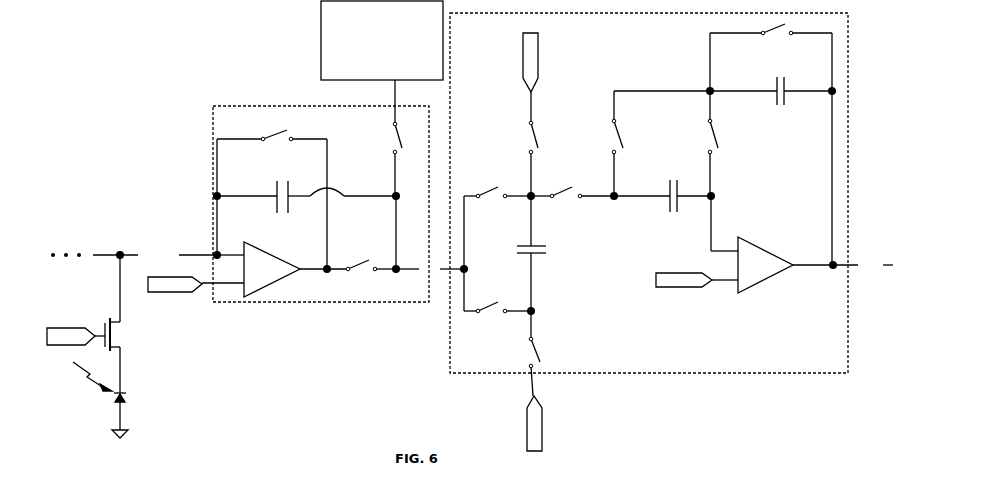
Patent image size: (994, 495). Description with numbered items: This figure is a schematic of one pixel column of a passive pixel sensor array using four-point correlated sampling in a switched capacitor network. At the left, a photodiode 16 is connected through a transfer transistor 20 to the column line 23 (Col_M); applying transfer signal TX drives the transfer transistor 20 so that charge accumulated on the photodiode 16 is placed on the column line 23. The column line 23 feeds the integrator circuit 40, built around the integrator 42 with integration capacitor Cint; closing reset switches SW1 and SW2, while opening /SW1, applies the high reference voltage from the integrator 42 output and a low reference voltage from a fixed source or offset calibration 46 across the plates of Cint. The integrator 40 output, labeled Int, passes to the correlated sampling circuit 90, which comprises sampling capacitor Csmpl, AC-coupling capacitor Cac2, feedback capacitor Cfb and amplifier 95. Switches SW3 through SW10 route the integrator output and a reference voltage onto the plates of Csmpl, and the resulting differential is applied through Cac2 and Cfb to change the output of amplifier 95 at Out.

The photodiode 16 is at (108, 403).
The transfer transistor 20 is at (93, 320).
The column line 23 is at (188, 247).
The integrator circuit 40 is at (203, 133).
The integrator 42 is at (272, 293).
The offset calibration 46 is at (382, 40).
The correlated sampling circuit 90 is at (780, 373).
The amplifier 95 is at (766, 288).